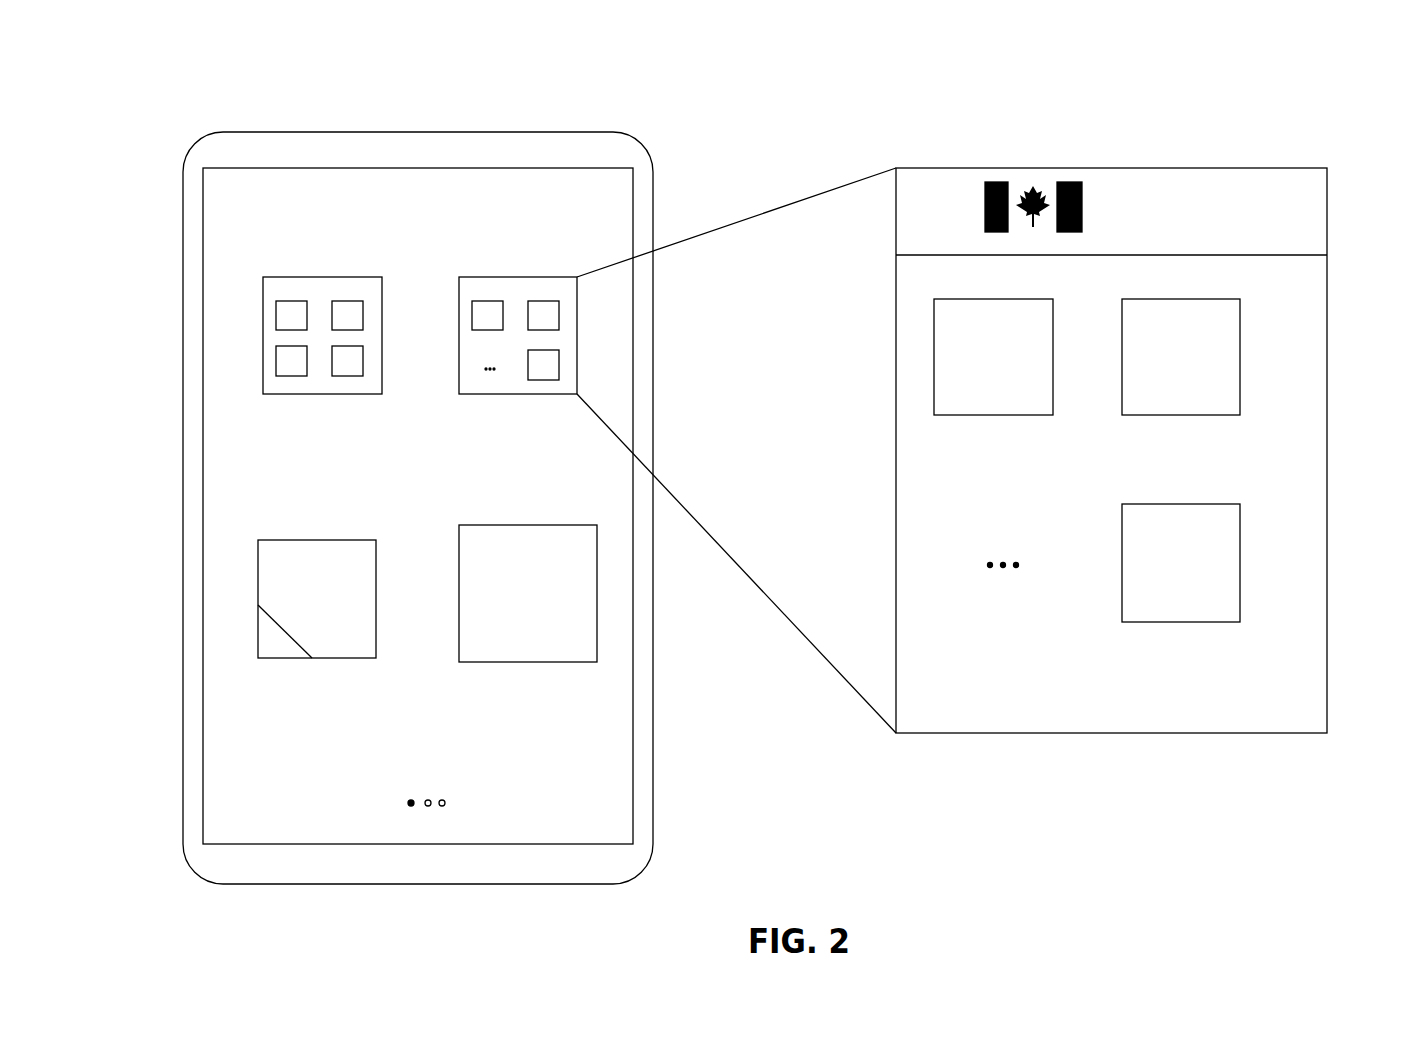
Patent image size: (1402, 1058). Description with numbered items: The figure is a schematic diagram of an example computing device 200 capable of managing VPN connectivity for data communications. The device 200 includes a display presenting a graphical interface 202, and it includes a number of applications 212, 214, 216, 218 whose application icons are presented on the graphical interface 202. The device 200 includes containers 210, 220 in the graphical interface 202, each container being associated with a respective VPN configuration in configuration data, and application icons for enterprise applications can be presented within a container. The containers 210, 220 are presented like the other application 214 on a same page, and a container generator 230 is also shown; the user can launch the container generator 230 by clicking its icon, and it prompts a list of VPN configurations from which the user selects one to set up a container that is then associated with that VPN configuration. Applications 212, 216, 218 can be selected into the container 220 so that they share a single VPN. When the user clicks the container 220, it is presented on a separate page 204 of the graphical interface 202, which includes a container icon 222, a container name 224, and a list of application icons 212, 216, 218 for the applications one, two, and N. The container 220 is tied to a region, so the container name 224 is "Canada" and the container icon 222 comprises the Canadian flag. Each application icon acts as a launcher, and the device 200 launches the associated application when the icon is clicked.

The computing device 200 is at (150, 108).
The graphical interface 202 is at (388, 190).
The separate page 204 is at (1298, 190).
The container 210 is at (323, 277).
The application 212 is at (276, 318).
The application 214 is at (299, 540).
The application 216 is at (559, 319).
The application 218 is at (559, 370).
The container 220 is at (510, 277).
The container icon 222 is at (998, 182).
The container name 224 is at (1177, 182).
The container generator 230 is at (469, 525).